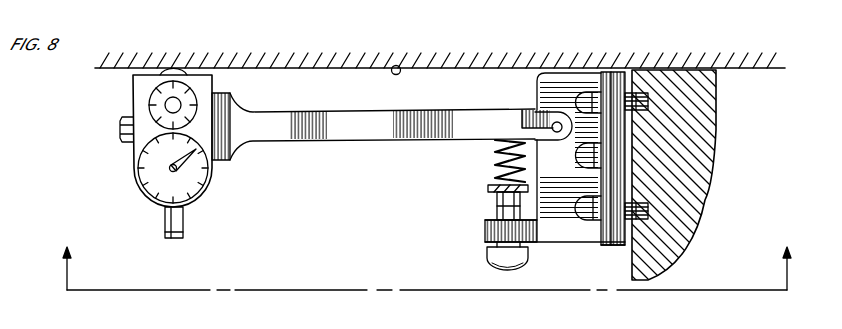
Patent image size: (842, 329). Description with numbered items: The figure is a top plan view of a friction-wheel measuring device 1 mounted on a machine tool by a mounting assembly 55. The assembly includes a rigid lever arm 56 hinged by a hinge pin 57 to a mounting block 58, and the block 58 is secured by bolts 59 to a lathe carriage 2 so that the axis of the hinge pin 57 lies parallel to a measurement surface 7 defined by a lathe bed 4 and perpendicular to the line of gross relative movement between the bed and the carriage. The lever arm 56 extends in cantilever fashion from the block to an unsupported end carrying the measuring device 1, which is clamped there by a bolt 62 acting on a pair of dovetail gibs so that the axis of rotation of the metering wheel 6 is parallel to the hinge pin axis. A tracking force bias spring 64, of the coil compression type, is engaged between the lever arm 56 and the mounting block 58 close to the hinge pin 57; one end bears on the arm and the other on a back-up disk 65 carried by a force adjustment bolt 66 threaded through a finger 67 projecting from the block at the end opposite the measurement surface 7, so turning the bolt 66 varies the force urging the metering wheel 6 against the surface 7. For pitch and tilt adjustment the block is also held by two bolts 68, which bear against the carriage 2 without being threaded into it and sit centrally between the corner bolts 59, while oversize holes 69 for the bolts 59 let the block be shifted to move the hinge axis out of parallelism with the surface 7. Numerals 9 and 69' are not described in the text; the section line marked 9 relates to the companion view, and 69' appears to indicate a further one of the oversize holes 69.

The measuring device 1 is at (208, 199).
The lathe carriage 2 is at (711, 138).
The lathe bed 4 is at (325, 62).
The metering wheel 6 is at (175, 66).
The measurement surface 7 is at (401, 64).
The section line 9- 9 is at (425, 257).
The mounting assembly 55 is at (413, 158).
The lever arm 56 is at (372, 93).
The hinge pin 57 is at (525, 110).
The mounting block 58 is at (572, 233).
The bolts 59 is at (652, 96).
The bolt 62 is at (121, 141).
The tracking force bias spring 64 is at (494, 164).
The back-up disk 65 is at (488, 190).
The force adjustment bolt 66 is at (490, 268).
The finger 67 is at (487, 231).
The bolts 68 is at (578, 134).
The oversize holes 69 is at (625, 136).
The plate edge 69' is at (597, 261).